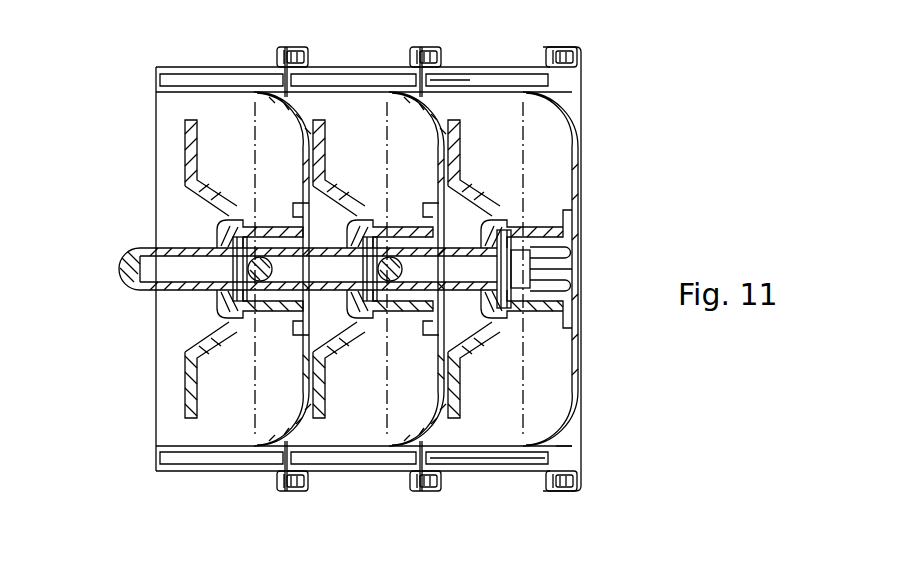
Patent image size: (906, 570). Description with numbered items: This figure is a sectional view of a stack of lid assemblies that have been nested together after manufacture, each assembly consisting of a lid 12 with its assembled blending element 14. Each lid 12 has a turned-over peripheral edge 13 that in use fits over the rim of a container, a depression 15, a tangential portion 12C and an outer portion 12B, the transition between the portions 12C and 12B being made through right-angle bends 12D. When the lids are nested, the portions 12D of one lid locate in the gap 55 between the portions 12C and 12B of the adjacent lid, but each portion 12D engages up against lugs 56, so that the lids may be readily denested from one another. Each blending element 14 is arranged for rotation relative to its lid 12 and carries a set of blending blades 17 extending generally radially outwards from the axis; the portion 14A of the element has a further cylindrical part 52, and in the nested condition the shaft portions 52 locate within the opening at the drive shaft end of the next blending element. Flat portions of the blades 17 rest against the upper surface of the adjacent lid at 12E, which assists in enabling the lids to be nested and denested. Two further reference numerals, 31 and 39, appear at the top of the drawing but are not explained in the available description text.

The lid 12 is at (595, 130).
The outer portion 12B is at (453, 470).
The tangential portion 12C is at (485, 440).
The right-angle bends 12D is at (393, 473).
The upper surface of the lid 12E is at (580, 380).
The peripheral edge 13 is at (570, 492).
The blending element 14 is at (367, 120).
The portion 14A is at (558, 270).
The depression 15 is at (545, 207).
The blending blades 17 is at (185, 157).
The top member 31 is at (464, 40).
The flange 39 is at (518, 78).
The cylindrical part 52 is at (115, 275).
The gap 55 is at (568, 455).
The lugs 56 is at (517, 453).